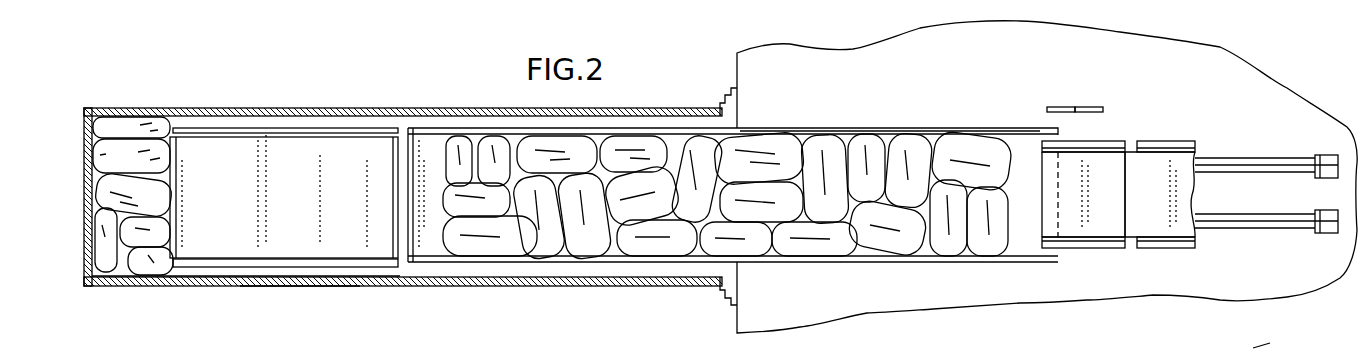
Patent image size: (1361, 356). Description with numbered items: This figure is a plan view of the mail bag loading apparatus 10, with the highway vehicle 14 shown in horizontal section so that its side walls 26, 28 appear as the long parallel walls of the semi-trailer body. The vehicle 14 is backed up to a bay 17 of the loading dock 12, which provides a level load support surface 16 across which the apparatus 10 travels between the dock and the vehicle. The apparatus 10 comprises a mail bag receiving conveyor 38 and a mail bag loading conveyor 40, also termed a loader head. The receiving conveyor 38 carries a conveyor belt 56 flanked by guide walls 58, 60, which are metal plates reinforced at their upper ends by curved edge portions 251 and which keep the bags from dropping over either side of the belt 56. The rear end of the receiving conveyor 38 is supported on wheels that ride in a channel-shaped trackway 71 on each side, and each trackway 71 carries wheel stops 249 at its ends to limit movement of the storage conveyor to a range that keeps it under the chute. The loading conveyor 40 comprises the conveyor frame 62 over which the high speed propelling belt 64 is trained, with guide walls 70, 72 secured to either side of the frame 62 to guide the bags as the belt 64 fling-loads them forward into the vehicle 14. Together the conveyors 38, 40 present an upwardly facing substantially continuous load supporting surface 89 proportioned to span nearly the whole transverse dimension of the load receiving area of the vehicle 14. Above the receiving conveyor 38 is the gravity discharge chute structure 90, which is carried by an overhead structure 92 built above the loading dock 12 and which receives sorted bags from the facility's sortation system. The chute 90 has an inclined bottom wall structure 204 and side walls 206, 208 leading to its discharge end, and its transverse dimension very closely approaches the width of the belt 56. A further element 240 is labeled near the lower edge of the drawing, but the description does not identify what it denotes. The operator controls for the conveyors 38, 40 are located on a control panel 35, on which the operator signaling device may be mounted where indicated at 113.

The apparatus 10 is at (1047, 177).
The loading dock 12 is at (897, 110).
The highway vehicle 14 is at (411, 208).
The load support surface 16 is at (738, 323).
The bay 17 is at (782, 120).
The side wall 26 is at (330, 286).
The side wall 28 is at (353, 109).
The control panel 35 is at (1102, 107).
The mail bag receiving conveyor 38 is at (885, 248).
The mail bag loading conveyor 40 is at (367, 243).
The conveyor belt 56 is at (432, 152).
The guide wall 58 is at (575, 262).
The guide wall 60 is at (607, 132).
The conveyor frame 62 is at (240, 277).
The high speed propelling belt 64 is at (285, 208).
The guide wall 70 is at (263, 277).
The trackway 71 is at (1260, 163).
The guide wall 72 is at (272, 128).
The load supporting surface 89 is at (425, 242).
The gravity discharge chute structure 90 is at (1144, 179).
The overhead structure 92 is at (1276, 342).
The operator signaling device location 113 is at (1078, 107).
The inclined bottom wall structure 204 is at (1170, 187).
The side wall 206 is at (1153, 248).
The side wall 208 is at (1152, 141).
The support 240 is at (300, 321).
The wheel stop 249 is at (1332, 155).
The curved edge portion 251 is at (655, 127).